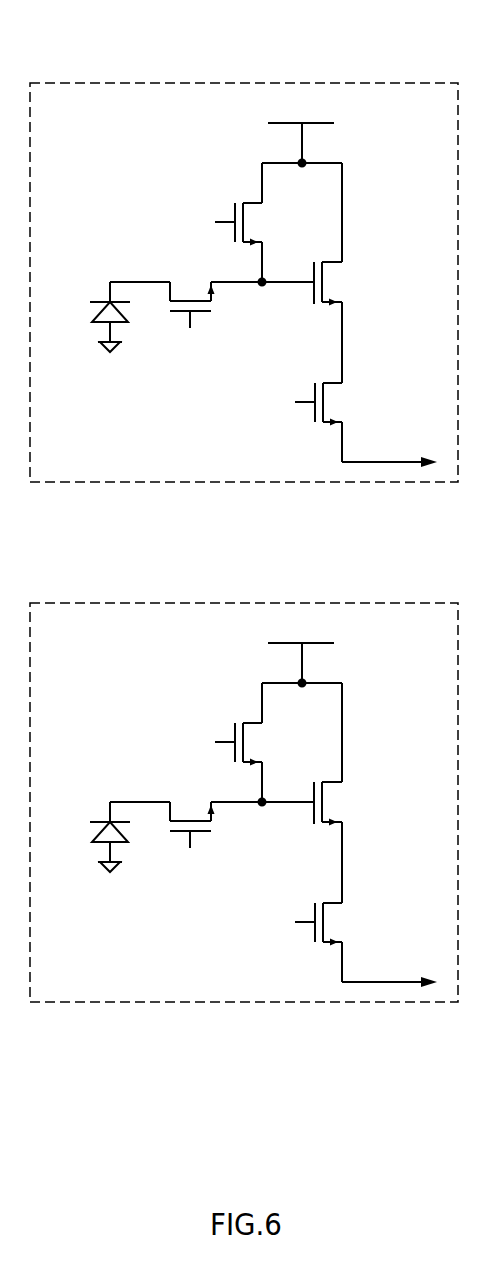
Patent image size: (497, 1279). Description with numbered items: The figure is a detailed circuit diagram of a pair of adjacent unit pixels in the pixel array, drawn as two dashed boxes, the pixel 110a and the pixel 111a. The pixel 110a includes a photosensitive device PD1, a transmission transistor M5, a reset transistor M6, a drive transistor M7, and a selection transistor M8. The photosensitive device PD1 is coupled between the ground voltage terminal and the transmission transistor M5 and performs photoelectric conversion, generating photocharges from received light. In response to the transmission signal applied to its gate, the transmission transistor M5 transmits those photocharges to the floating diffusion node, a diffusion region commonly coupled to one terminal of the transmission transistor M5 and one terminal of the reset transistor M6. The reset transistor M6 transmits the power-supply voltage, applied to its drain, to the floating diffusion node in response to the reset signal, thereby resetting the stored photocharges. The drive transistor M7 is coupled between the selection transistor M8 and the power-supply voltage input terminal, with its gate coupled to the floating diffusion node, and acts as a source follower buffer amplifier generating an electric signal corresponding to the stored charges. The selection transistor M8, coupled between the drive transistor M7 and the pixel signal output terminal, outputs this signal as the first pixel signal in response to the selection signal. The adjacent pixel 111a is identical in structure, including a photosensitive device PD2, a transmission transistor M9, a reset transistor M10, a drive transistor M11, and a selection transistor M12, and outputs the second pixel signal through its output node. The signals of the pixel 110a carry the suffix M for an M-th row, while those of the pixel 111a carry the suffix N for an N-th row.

The pixel 110a is at (243, 83).
The pixel 111a is at (243, 603).
The transmission transistor M5 is at (162, 295).
The reset transistor M6 is at (250, 242).
The drive transistor M7 is at (339, 322).
The selection transistor M8 is at (366, 425).
The transmission transistor M9 is at (162, 815).
The reset transistor M10 is at (257, 762).
The drive transistor M11 is at (346, 842).
The selection transistor M12 is at (366, 945).
The photosensitive device PD1 is at (86, 317).
The photosensitive device PD2 is at (86, 837).